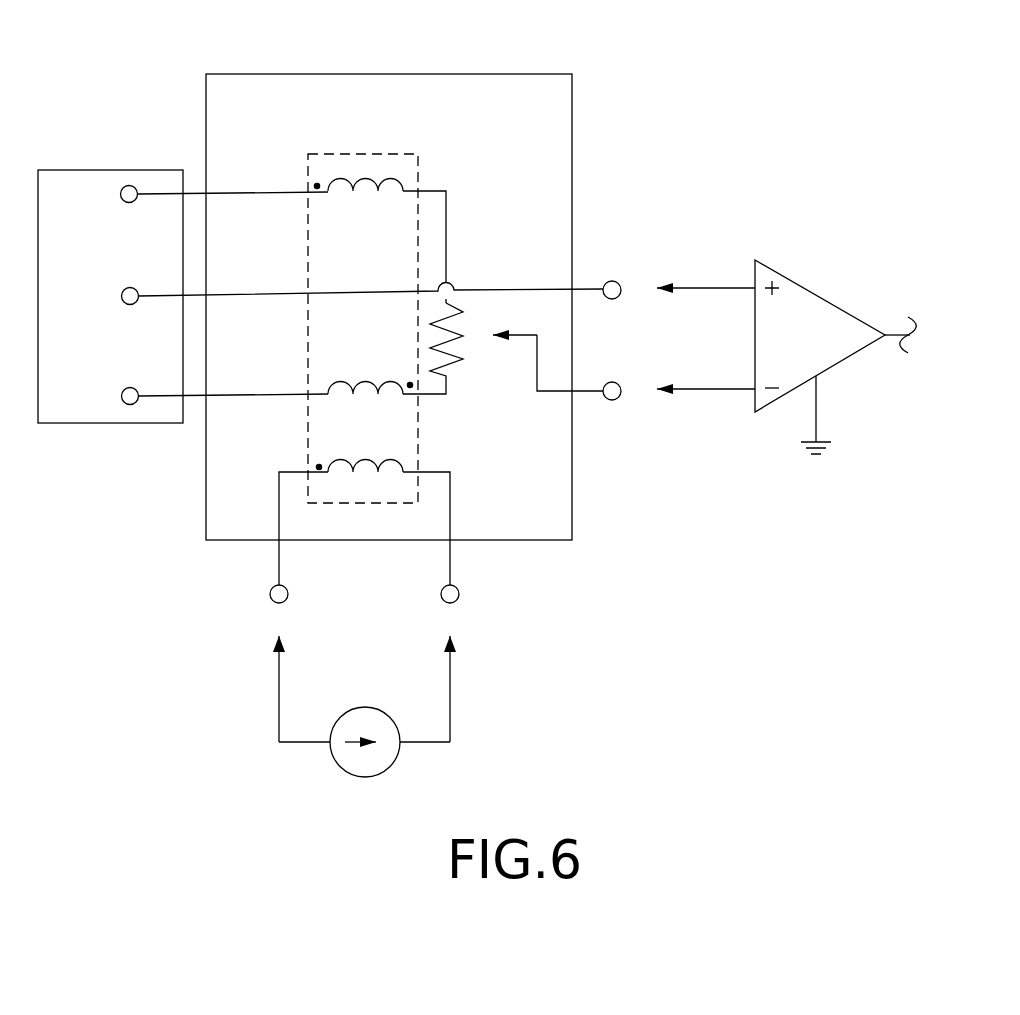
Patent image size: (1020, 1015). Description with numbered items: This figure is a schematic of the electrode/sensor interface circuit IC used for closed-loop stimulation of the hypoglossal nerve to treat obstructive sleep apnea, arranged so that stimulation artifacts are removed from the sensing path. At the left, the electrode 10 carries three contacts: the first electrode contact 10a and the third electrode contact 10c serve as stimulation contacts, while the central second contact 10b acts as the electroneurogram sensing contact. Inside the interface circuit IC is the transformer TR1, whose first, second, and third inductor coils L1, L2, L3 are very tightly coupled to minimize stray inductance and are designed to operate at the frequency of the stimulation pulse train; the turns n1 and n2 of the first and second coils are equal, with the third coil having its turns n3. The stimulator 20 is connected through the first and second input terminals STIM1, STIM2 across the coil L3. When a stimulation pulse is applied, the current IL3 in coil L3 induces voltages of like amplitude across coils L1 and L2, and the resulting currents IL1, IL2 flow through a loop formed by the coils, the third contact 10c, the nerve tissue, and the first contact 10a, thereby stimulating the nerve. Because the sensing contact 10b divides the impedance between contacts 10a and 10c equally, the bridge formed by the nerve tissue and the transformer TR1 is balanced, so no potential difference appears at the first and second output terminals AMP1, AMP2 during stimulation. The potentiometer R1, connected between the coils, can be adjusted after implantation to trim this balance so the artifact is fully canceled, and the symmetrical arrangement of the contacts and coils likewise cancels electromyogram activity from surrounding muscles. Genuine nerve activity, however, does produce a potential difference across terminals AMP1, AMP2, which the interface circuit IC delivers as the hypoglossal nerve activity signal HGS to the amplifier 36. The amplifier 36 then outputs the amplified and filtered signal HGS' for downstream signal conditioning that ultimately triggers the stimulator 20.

The electrode 10 is at (128, 160).
The first electrode contact 10a is at (127, 203).
The second electrode contact 10b is at (128, 305).
The third electrode contact 10c is at (123, 390).
The interface circuit IC is at (423, 70).
The transformer TR1 is at (340, 152).
The first inductor coil L1 is at (363, 206).
The second inductor coil L2 is at (370, 373).
The third inductor coil L3 is at (364, 451).
The number of turns of first coil n1 is at (338, 216).
The number of turns of second coil n2 is at (338, 368).
The number of turns of third coil n3 is at (338, 446).
The current in first coil IL1 is at (292, 207).
The current in second coil IL2 is at (297, 379).
The current in third coil IL3 is at (492, 458).
The potentiometer R1 is at (503, 348).
The first output terminal AMP1 is at (677, 273).
The second output terminal AMP2 is at (677, 374).
The first input terminal STIM1 is at (316, 650).
The second input terminal STIM2 is at (487, 650).
The stimulator 20 is at (335, 779).
The amplifier 36 is at (841, 305).
The hypoglossal nerve activity signal HGS is at (722, 239).
The amplified and filtered hypoglossal nerve activity signal HGS' is at (864, 387).